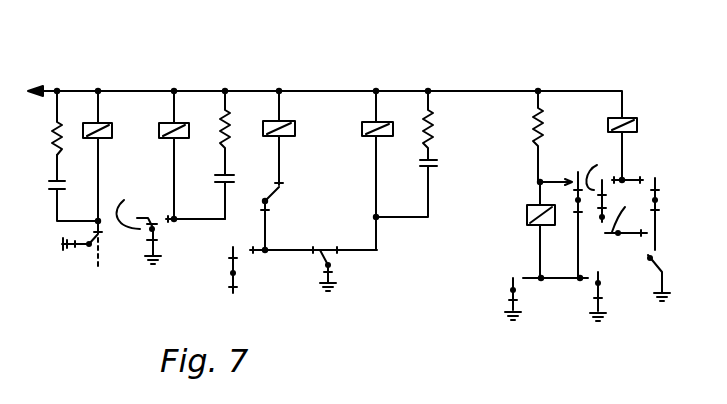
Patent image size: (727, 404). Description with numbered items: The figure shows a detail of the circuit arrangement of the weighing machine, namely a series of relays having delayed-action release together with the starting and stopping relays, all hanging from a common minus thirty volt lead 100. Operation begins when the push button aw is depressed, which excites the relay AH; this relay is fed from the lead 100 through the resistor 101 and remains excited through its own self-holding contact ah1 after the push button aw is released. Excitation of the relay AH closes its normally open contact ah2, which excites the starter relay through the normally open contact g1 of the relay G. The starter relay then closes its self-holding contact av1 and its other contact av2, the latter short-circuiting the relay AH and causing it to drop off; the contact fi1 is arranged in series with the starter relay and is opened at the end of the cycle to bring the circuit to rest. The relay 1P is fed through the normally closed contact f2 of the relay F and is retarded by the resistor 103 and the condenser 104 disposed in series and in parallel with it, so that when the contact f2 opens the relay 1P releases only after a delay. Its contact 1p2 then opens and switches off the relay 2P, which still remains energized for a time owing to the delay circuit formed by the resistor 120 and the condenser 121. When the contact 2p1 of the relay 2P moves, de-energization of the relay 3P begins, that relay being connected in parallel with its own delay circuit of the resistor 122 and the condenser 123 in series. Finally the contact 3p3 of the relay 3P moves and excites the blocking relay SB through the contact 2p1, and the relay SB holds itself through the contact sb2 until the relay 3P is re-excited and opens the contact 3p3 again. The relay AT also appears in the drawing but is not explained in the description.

The —30 volt lead 100 is at (591, 88).
The resistor 103 is at (51, 140).
The condenser 104 is at (52, 189).
The relay 1P is at (112, 129).
The normally closed contact of the relay F f2 is at (96, 243).
The contact of relay 1P 1p2 is at (139, 220).
The relay 2P is at (186, 128).
The resistor 120 is at (243, 147).
The condenser 121 is at (235, 184).
The holding contact of relay SB sb2 is at (231, 262).
The blocking relay SB is at (272, 191).
The contact of relay 3P 3p3 is at (294, 122).
The contact of relay 2P 2p1 is at (323, 260).
The relay 3P is at (390, 128).
The resistor 122 is at (436, 130).
The condenser 123 is at (437, 158).
The resistor 101 is at (546, 133).
The relay AH is at (527, 215).
The contact of relay AV av2 is at (578, 178).
The normally open contact of relay AH ah2 is at (602, 185).
The relay AT is at (637, 124).
The normally open contact of relay G g1 is at (626, 220).
The self-holding contact of relay AV av1 is at (670, 158).
The contact of relay FI fi1 is at (652, 267).
The self-holding contact of relay AH ah1 is at (511, 286).
The push button aw is at (596, 284).